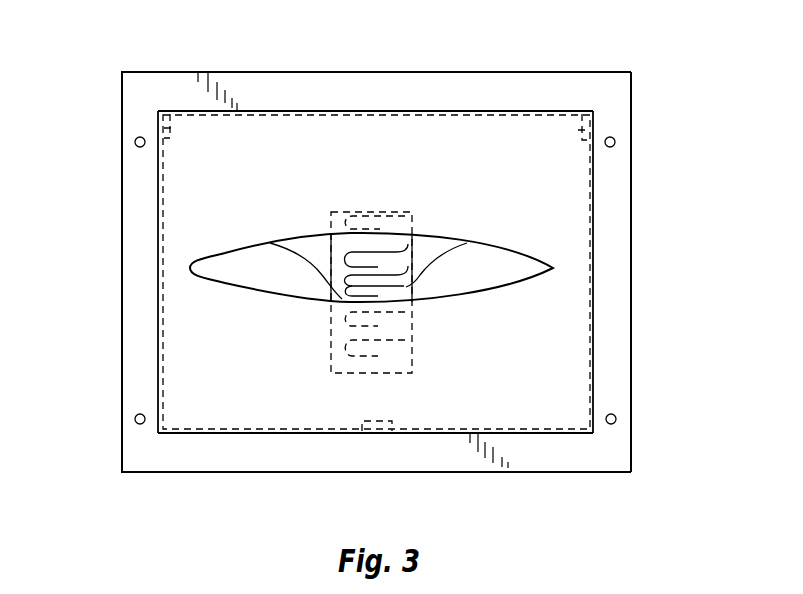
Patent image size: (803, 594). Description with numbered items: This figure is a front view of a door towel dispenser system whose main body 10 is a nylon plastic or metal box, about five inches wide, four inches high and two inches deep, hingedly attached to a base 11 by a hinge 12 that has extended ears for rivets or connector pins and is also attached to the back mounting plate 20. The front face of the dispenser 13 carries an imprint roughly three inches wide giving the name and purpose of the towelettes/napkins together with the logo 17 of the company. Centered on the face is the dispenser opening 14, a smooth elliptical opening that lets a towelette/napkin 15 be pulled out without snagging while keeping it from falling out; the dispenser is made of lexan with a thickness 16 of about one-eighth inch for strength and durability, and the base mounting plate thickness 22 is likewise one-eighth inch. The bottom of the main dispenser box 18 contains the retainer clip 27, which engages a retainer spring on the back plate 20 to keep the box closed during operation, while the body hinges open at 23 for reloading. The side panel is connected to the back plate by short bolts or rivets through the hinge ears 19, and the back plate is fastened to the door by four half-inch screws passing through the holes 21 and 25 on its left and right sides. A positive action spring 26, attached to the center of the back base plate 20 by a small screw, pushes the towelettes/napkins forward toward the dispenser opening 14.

The main body 10 is at (500, 110).
The base 11 is at (613, 105).
The hinge 12 is at (615, 146).
The front face of the dispenser 13 is at (500, 161).
The dispenser opening 14 is at (533, 258).
The towelette/napkin 15 is at (437, 263).
The thickness 16 is at (593, 375).
The logo 17 is at (440, 393).
The bottom of the main dispenser box 18 is at (428, 433).
The hinge ears 19 is at (170, 115).
The back mounting plate 20 is at (132, 107).
The holes 21 is at (135, 143).
The base mounting plate thickness 22 is at (122, 200).
The hinge opening location 23 is at (158, 263).
The holes 25 is at (135, 419).
The positive action spring 26 is at (343, 334).
The retainer clip 27 is at (365, 424).